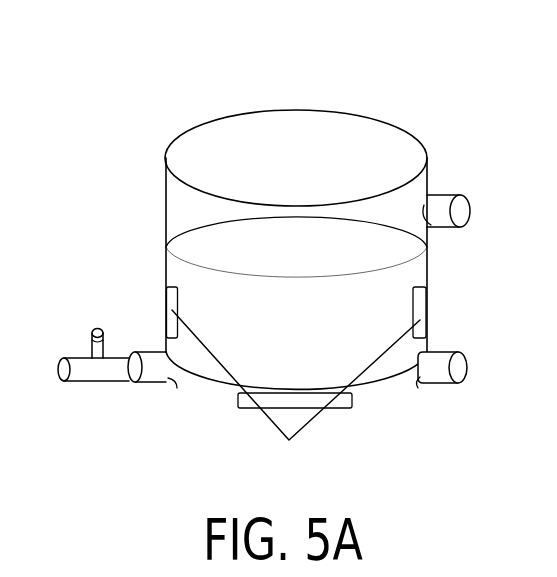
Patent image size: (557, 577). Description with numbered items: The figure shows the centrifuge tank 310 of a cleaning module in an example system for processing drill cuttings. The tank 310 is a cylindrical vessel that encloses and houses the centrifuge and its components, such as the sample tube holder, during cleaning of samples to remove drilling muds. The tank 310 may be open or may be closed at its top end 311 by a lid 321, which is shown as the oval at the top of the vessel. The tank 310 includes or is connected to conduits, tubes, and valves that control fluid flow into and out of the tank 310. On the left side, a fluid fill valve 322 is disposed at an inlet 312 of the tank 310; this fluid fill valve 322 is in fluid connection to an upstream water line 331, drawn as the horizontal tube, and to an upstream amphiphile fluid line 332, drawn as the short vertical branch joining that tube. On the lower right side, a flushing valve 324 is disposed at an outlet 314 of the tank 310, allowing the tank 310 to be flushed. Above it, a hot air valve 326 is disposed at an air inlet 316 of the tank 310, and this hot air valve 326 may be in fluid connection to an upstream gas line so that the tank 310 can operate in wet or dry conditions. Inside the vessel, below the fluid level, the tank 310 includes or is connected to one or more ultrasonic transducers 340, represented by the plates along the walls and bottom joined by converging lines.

The tank 310 is at (372, 86).
The top end 311 is at (165, 158).
The inlet 312 is at (178, 385).
The outlet 314 is at (418, 385).
The air inlet 316 is at (430, 222).
The lid 321 is at (280, 135).
The fluid fill valve 322 is at (148, 375).
The flushing valve 324 is at (442, 368).
The hot air valve 326 is at (442, 202).
The upstream water line 331 is at (60, 368).
The upstream amphiphile fluid line 332 is at (90, 348).
The ultrasonic transducers 340 is at (280, 402).